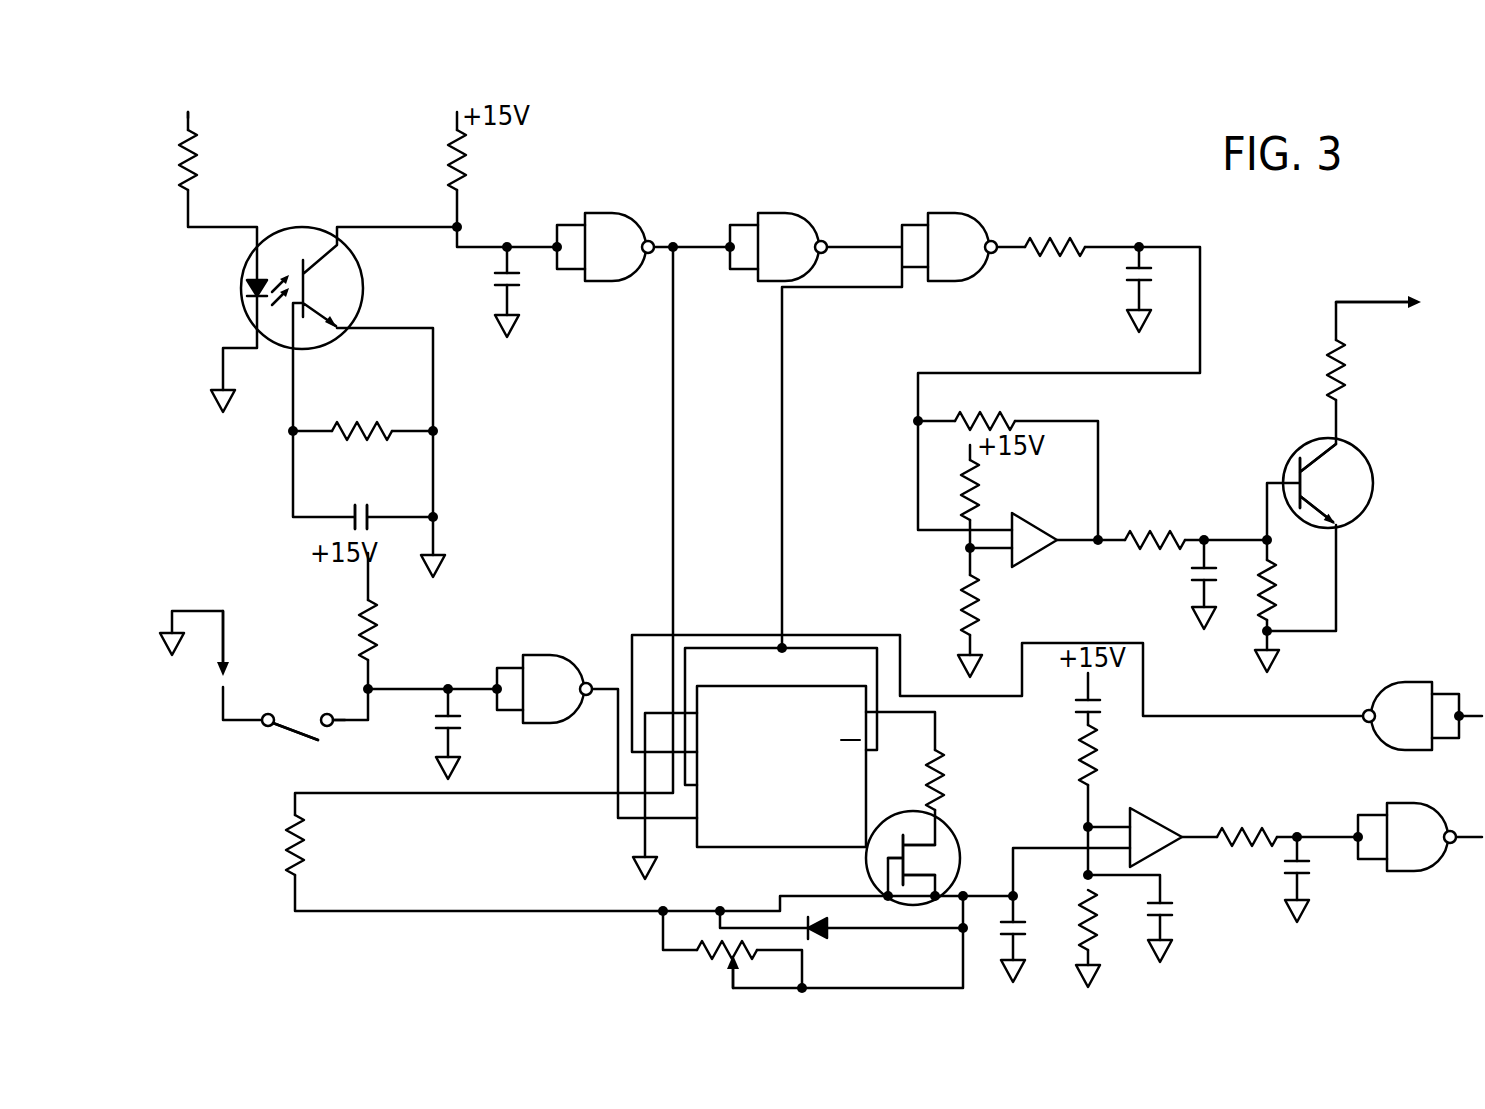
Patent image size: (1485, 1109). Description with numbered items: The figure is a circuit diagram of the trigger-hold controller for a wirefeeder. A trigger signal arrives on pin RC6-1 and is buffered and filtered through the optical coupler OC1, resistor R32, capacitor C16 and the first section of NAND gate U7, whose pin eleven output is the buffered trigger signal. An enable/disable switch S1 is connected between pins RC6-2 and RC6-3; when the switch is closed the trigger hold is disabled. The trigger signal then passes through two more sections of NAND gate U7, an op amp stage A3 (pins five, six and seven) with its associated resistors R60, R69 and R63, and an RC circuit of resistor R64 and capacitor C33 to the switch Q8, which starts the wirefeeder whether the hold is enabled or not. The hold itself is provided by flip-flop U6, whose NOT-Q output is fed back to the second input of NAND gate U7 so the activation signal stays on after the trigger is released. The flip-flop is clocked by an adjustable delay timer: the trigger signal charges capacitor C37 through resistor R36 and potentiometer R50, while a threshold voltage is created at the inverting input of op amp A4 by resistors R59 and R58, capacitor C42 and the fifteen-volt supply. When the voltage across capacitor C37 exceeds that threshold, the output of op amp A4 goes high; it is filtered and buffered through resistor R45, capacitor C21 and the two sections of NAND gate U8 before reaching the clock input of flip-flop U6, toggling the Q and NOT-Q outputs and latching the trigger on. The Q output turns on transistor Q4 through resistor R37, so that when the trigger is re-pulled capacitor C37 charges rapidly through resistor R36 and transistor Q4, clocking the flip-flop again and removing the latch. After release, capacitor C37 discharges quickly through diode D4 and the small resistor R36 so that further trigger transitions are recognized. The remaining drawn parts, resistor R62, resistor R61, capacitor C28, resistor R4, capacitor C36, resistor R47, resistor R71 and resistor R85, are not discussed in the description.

The pin RC6-1 is at (228, 115).
The resistor R62 is at (217, 160).
The resistor R32 is at (485, 160).
The capacitor C16 is at (483, 280).
The optical coupler OC1 is at (284, 288).
The resistor R61 is at (365, 414).
The capacitor C28 is at (371, 500).
The resistor R4 is at (391, 630).
The pin RC6-2 is at (264, 640).
The enable/disable switch S1 is at (296, 740).
The pin RC6-3 is at (888, 509).
The capacitor C36 is at (425, 712).
The NAND gate U7 is at (752, 468).
The resistor R47 is at (1058, 261).
The resistor R63 is at (985, 404).
The resistor R60 is at (996, 489).
The resistor R69 is at (998, 605).
The operational amplifier A3 is at (1033, 539).
The resistor R64 is at (1155, 525).
The capacitor C33 is at (1178, 582).
The resistor R71 is at (1365, 370).
The switch Q8 is at (1350, 483).
The resistor R85 is at (1295, 590).
The flip-flop U6 is at (781, 750).
The resistor R37 is at (963, 780).
The transistor Q4 is at (934, 858).
The resistor R36 is at (323, 845).
The potentiometer R50 is at (718, 964).
The diode D4 is at (838, 939).
The capacitor C37 is at (1042, 941).
The resistor R58 is at (1065, 913).
The resistor R59 is at (1065, 755).
The op amp A4 is at (1156, 836).
The capacitor C42 is at (1189, 910).
The resistor R45 is at (1251, 822).
The capacitor C21 is at (1329, 877).
The NAND gate U8 is at (1414, 774).